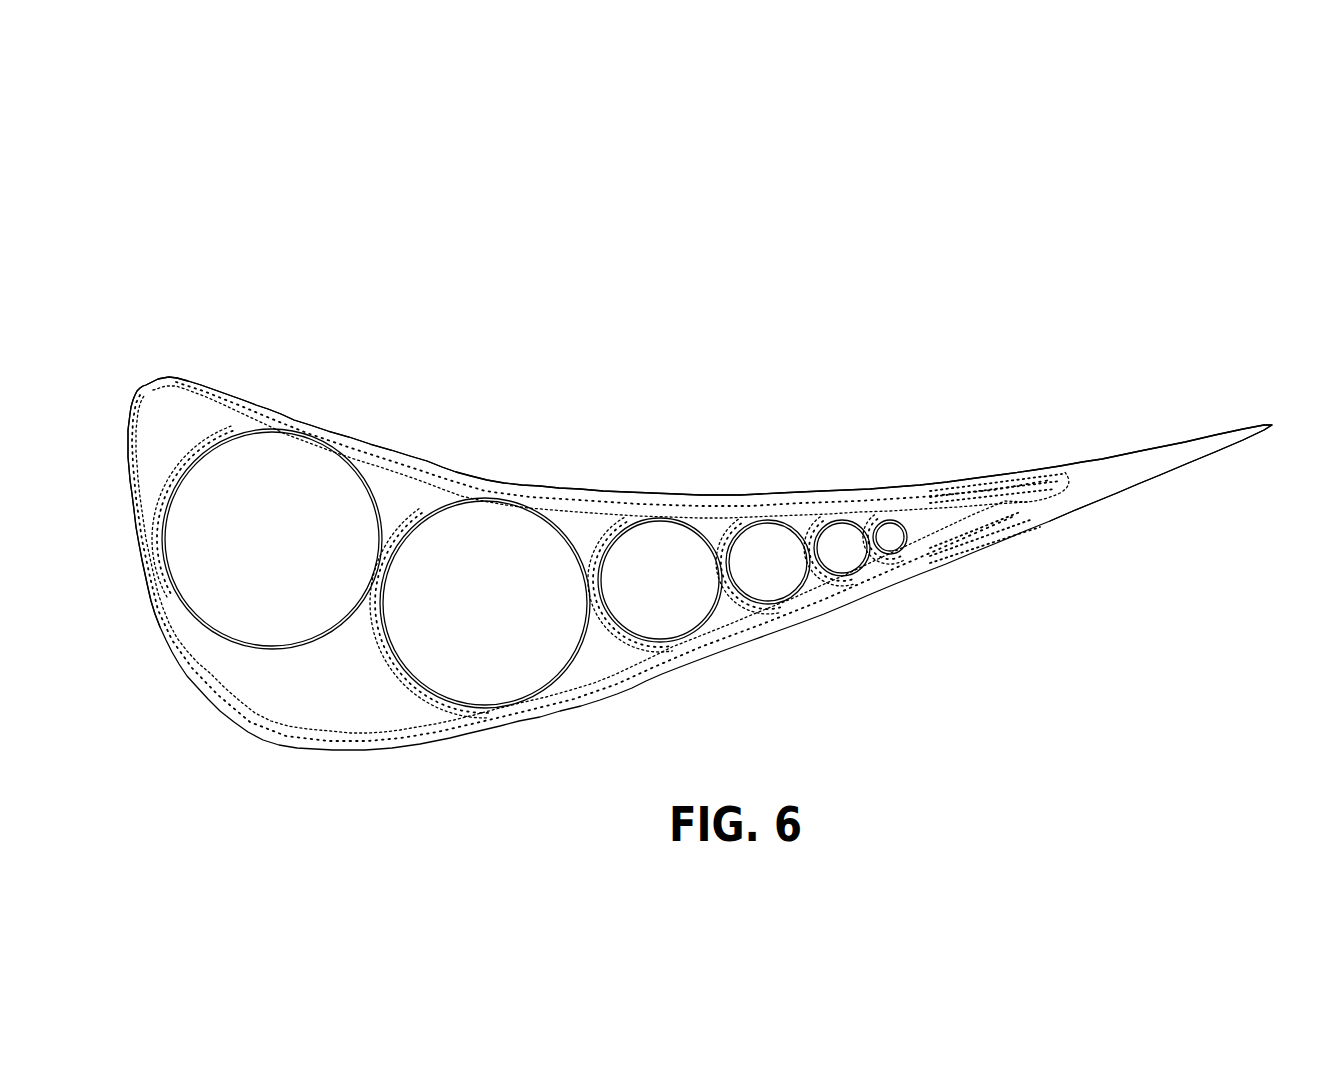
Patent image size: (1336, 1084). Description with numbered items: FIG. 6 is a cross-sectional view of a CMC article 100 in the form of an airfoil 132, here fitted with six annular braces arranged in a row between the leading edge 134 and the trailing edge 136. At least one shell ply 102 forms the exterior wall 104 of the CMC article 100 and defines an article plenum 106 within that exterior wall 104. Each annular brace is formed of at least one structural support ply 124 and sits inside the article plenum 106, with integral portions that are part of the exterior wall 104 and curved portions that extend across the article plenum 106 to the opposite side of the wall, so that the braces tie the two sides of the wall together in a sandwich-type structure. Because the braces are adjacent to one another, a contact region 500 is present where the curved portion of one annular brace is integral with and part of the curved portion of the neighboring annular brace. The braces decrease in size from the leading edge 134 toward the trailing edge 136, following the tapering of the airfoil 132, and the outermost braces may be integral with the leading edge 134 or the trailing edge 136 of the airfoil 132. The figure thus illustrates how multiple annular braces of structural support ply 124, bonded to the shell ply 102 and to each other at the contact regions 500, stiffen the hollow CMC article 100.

The CMC article 100 is at (412, 273).
The shell ply 102 is at (333, 428).
The exterior wall 104 is at (688, 505).
The article plenum 106 is at (307, 672).
The structural support ply 124 is at (235, 432).
The airfoil 132 is at (542, 353).
The leading edge 134 is at (162, 664).
The trailing edge 136 is at (1205, 492).
The contact region 500 is at (360, 598).